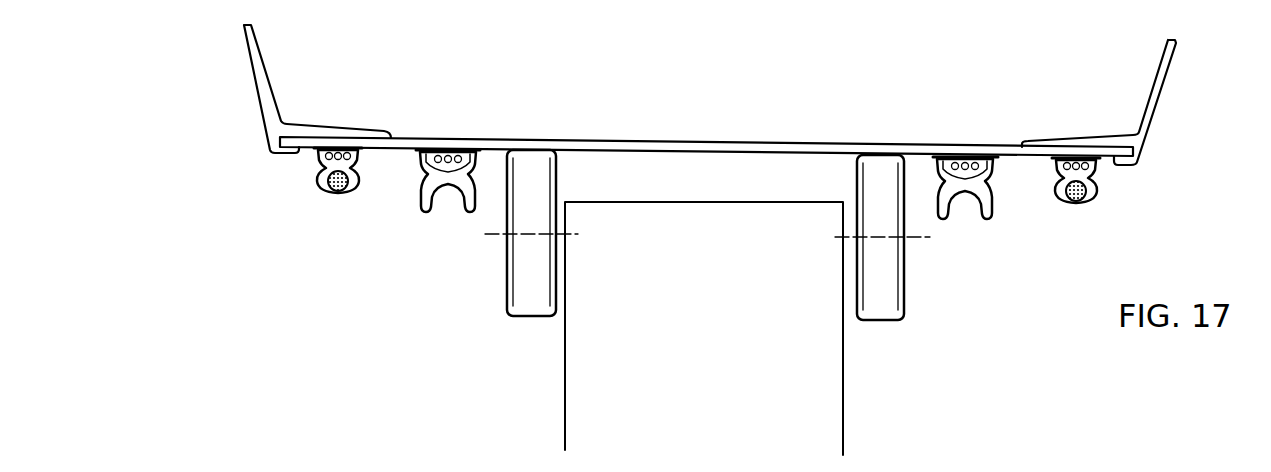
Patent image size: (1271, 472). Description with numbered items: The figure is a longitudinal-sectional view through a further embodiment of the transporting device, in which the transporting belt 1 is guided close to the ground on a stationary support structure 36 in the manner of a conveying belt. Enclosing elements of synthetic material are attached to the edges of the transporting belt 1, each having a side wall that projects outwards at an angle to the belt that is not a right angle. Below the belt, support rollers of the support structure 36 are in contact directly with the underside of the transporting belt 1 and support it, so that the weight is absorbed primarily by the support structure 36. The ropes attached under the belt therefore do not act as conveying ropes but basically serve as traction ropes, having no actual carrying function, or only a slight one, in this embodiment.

The transporting belt 1 is at (697, 141).
The support structure 36 is at (901, 372).